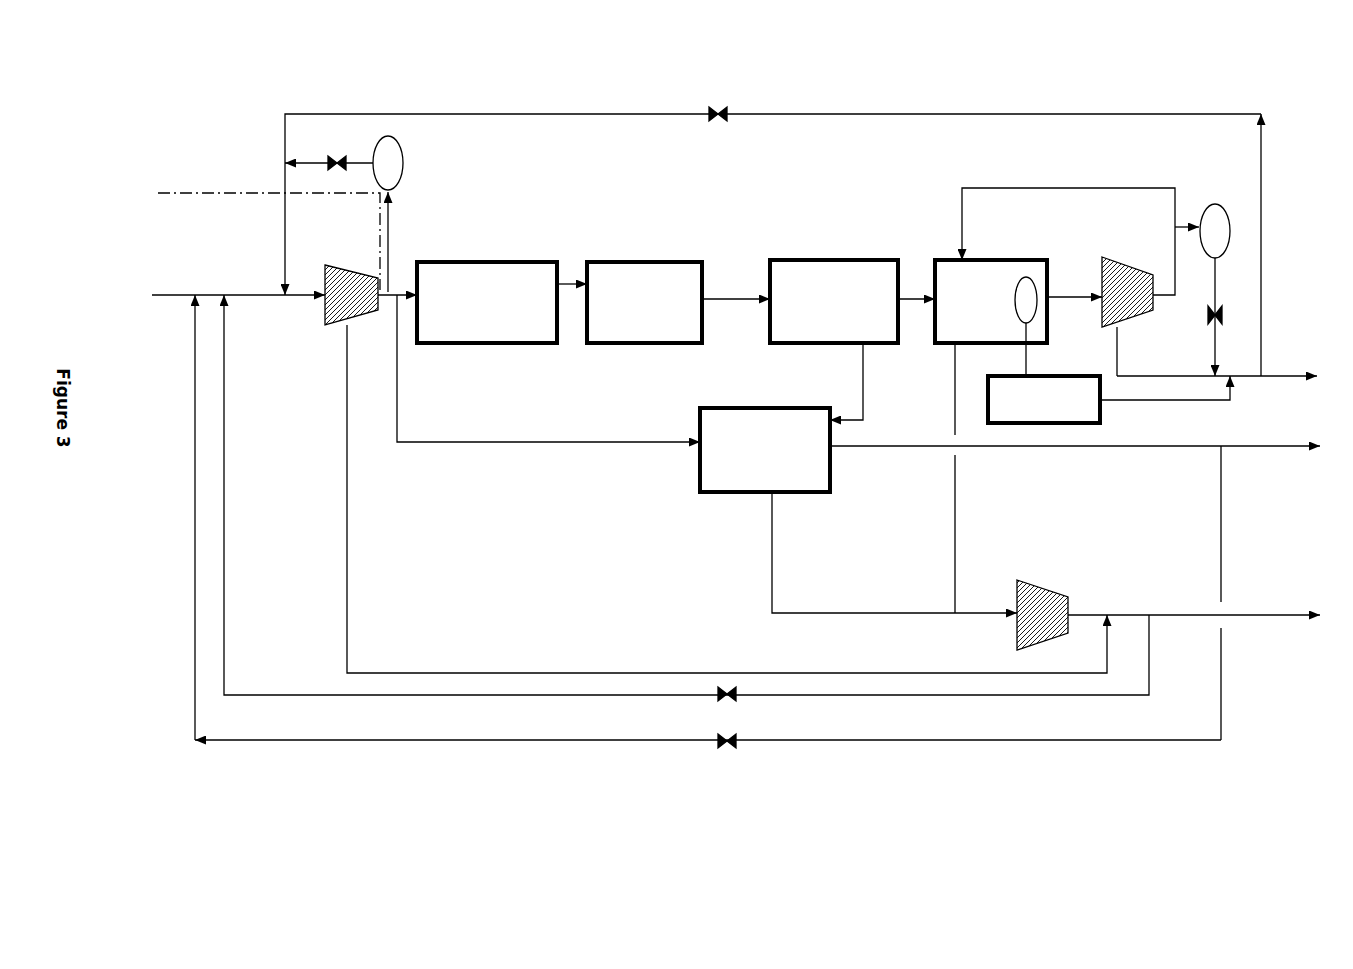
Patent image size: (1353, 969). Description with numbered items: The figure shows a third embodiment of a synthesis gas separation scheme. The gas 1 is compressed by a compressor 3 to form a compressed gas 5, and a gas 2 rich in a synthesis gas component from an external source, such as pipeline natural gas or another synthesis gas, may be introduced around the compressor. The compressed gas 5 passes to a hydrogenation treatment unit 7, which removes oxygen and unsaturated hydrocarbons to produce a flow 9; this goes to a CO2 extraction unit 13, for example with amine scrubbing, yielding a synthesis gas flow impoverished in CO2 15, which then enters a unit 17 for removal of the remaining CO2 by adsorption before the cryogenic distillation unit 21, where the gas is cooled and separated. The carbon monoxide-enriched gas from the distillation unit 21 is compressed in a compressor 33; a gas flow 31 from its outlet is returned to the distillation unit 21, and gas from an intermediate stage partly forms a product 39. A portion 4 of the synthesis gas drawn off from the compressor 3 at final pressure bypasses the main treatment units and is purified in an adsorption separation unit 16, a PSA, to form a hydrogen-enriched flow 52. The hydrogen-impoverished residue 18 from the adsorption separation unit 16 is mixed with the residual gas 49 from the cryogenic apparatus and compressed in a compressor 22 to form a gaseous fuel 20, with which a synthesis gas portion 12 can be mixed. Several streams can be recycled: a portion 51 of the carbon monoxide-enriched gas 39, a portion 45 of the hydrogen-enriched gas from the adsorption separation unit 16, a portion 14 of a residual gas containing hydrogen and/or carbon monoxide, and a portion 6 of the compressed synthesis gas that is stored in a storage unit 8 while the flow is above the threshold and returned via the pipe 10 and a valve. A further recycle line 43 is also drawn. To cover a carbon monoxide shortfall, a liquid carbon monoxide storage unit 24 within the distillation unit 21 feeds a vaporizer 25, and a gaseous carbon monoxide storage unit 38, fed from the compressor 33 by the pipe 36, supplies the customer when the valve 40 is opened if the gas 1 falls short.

The gas 1 is at (190, 295).
The gas rich in a synthesis gas component 2 is at (222, 190).
The compressor 3 is at (345, 268).
The portion of the synthesis gas 4 is at (535, 441).
The compressed gas 5 is at (390, 292).
The portion of the compressed synthesis gas 6 is at (392, 221).
The hydrogenation treatment unit 7 is at (487, 302).
The storage unit 8 is at (405, 162).
The flow 9 is at (565, 288).
The pipe 10 is at (328, 160).
The synthesis gas portion 12 is at (755, 668).
The CO2 extraction unit 13 is at (644, 302).
The portion of a residual gas 14 is at (1149, 660).
The synthesis gas flow impoverished in CO2 15 is at (727, 300).
The adsorption separation unit 16 is at (765, 450).
The unit for the removal of CO2 by adsorption 17 is at (852, 340).
The residue 18 is at (773, 520).
The gaseous fuel 20 is at (1305, 610).
The cryogenic distillation unit 21 is at (991, 301).
The compressor 22 is at (1058, 595).
The liquid carbon monoxide storage unit 24 is at (1022, 278).
The vaporizer 25 is at (1109, 399).
The gas flow 31 is at (1063, 190).
The compressor 33 is at (1125, 318).
The pipe 36 is at (1181, 226).
The gaseous carbon monoxide storage unit 38 is at (1220, 204).
The product 39 is at (1275, 378).
The valve 40 is at (1220, 320).
The recycle line 43 is at (1267, 447).
The portion of the hydrogen-enriched gas 45 is at (903, 743).
The residual gas 49 is at (957, 515).
The portion of the carbon monoxide-enriched gas 51 is at (1262, 197).
The hydrogen-enriched flow 52 is at (1105, 447).